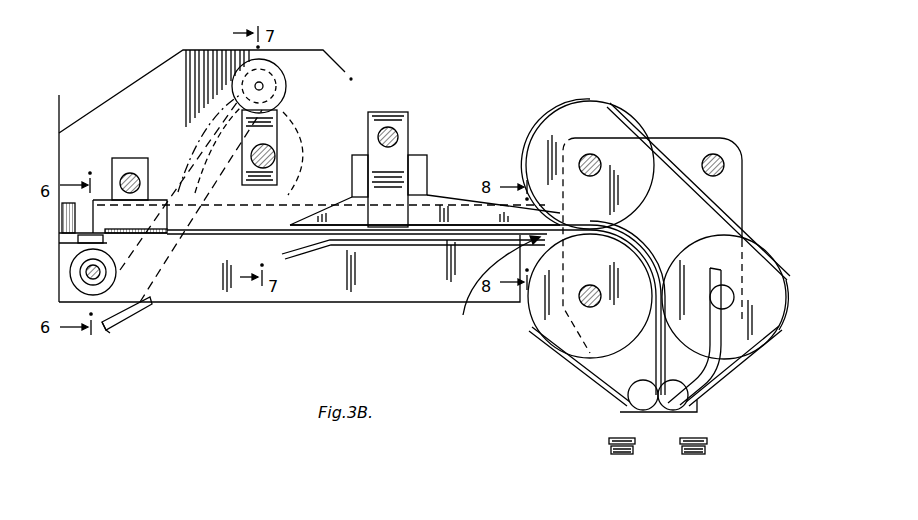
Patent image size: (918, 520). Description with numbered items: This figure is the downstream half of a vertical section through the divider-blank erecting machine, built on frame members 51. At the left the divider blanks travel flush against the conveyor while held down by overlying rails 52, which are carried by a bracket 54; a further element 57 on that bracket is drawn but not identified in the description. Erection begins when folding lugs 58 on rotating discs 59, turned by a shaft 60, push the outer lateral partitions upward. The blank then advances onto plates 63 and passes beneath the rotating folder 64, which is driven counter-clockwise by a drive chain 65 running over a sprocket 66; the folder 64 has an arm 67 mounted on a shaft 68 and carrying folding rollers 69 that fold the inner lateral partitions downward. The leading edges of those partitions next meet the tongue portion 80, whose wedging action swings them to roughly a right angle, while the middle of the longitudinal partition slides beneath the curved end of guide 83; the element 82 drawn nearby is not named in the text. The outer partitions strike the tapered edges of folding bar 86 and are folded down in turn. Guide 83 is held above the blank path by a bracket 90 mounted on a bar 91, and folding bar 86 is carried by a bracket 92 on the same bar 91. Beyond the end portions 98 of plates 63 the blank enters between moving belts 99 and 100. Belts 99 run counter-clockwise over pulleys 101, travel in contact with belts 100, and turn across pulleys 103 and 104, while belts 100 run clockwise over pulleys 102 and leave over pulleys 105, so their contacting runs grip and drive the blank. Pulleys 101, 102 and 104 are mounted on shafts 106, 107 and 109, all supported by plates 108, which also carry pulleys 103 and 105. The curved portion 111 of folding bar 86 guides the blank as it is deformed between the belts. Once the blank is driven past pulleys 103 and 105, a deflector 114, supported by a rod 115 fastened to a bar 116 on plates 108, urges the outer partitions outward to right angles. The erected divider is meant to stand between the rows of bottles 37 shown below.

The bottles 37 is at (620, 454).
The frame members 51 is at (405, 287).
The rails 52 is at (73, 223).
The bracket 54 is at (117, 160).
The pin 57 is at (131, 177).
The folding lugs 58 is at (112, 241).
The discs 59 is at (108, 290).
The shaft 60 is at (97, 277).
The plates 63 is at (178, 240).
The rotating folder 64 is at (288, 101).
The drive chain 65 is at (105, 330).
The sprocket 66 is at (232, 190).
The arm 67 is at (276, 128).
The shaft 68 is at (276, 156).
The folding rollers 69 is at (278, 70).
The tongue portion 80 is at (305, 253).
The belt 82 is at (336, 222).
The guide 83 is at (398, 238).
The folding bar 86 is at (438, 220).
The bracket 90 is at (390, 112).
The bar 91 is at (398, 138).
The bracket 92 is at (422, 165).
The end portions 98 is at (498, 285).
The belts 99 is at (667, 150).
The belts 100 is at (588, 375).
The pulleys 101 is at (636, 173).
The pulleys 102 is at (628, 325).
The pulleys 103 is at (677, 399).
The pulleys 104 is at (773, 308).
The pulleys 105 is at (630, 404).
The shaft 106 is at (590, 155).
The shaft 107 is at (592, 285).
The plates 108 is at (693, 140).
The shaft 109 is at (732, 292).
The curved portion 111 is at (643, 236).
The deflector 114 is at (687, 402).
The rod 115 is at (710, 366).
The bar 116 is at (722, 162).